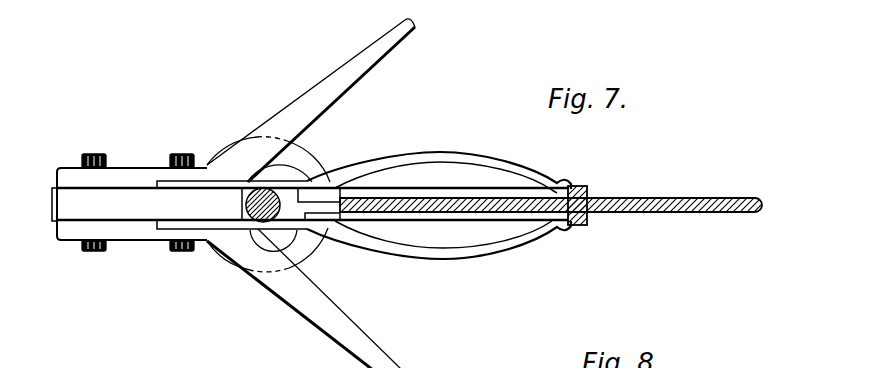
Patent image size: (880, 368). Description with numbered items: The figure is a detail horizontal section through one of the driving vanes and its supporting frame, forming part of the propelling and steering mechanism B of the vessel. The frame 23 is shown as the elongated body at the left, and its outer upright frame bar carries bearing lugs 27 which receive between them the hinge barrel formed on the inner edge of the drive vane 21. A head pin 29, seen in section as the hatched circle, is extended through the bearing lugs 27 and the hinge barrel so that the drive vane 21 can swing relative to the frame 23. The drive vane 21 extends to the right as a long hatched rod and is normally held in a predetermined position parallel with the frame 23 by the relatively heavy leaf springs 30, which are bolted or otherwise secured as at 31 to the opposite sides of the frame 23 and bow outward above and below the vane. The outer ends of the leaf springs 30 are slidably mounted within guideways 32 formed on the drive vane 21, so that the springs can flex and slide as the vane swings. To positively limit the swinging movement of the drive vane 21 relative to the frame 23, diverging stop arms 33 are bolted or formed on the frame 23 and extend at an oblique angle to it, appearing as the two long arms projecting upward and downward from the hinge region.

The lower drive vane 21 is at (655, 200).
The frame 23 is at (110, 195).
The bearing lugs 27 is at (288, 203).
The head pins 29 is at (273, 193).
The leaf springs 30 is at (497, 167).
The bolts 31 is at (193, 157).
The guideways 32 is at (477, 227).
The stop arms 33 is at (358, 70).
The propelling and steering mechanism B is at (439, 206).